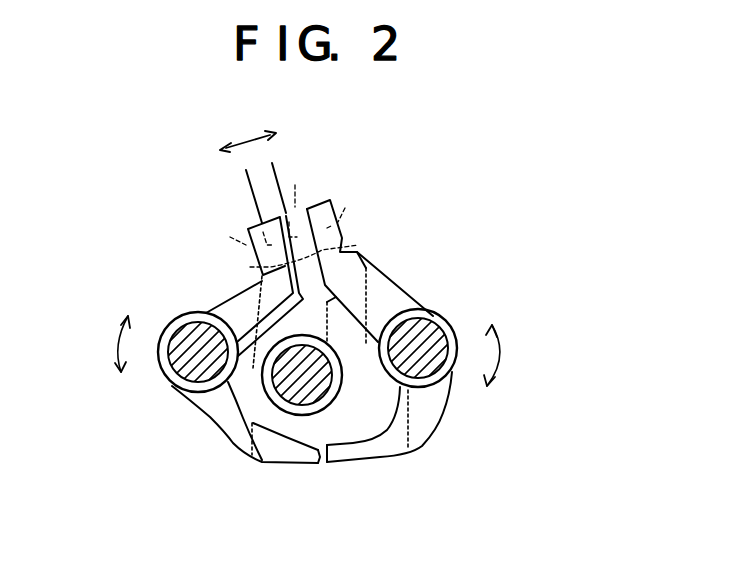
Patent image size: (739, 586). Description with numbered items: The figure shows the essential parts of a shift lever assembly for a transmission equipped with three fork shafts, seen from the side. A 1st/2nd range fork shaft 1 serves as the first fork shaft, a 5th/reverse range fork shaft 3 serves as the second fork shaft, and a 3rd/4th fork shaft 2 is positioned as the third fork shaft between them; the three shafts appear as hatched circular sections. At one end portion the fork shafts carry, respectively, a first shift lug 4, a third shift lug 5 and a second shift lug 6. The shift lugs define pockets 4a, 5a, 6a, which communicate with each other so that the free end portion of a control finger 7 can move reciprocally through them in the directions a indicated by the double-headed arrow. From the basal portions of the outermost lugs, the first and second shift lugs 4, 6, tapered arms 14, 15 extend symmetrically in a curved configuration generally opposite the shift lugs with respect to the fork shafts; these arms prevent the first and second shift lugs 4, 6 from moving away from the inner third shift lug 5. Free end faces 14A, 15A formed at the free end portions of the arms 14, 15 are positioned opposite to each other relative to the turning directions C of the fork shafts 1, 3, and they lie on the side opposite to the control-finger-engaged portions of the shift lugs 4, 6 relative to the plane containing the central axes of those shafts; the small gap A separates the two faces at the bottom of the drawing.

The 1st/2nd range fork shaft 1 is at (428, 323).
The 3rd/4th fork shaft 2 is at (293, 400).
The 5th/reverse range fork shaft 3 is at (190, 340).
The first shift lug 4 is at (330, 202).
The pocket 4a is at (352, 205).
The third shift lug 5 is at (345, 248).
The pocket 5a is at (298, 199).
The second shift lug 6 is at (250, 267).
The pocket 6a is at (275, 245).
The control finger 7 is at (256, 197).
The tapered arm 14 is at (427, 423).
The free end face 14A is at (326, 442).
The tapered arm 15 is at (233, 428).
The free end face 15A is at (321, 457).
The gap A is at (322, 464).
The turning directions C is at (118, 341).
The directions a is at (247, 140).